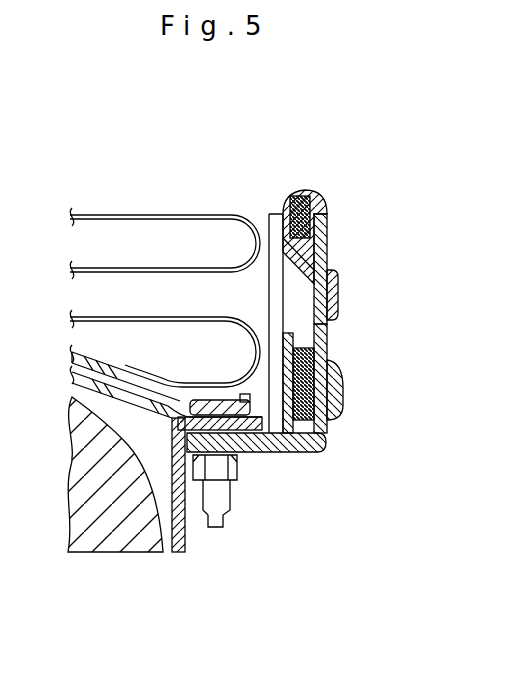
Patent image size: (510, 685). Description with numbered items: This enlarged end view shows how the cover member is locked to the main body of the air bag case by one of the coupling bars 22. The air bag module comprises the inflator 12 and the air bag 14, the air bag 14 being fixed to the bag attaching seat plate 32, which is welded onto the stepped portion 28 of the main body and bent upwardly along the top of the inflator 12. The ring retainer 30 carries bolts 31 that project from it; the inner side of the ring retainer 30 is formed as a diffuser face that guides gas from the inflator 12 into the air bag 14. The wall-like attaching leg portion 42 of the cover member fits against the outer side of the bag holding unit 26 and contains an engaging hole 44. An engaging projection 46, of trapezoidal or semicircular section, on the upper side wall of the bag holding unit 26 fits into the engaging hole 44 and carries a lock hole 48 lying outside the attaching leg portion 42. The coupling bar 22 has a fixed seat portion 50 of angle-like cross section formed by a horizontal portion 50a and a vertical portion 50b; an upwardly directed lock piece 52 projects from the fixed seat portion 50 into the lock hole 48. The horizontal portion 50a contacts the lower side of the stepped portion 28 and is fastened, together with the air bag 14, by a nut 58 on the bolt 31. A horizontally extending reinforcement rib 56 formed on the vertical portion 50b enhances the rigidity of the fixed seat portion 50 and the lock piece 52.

The inflator 12 is at (70, 537).
The air bag 14 is at (160, 215).
The coupling bar 22 is at (369, 284).
The bag holding unit 26 is at (270, 216).
The stepped portion 28 is at (228, 455).
The ring retainer 30 is at (307, 385).
The bolt 31 is at (184, 470).
The bag attaching seat plate 32 is at (205, 498).
The attaching leg portion 42 is at (327, 353).
The engaging hole 44 is at (323, 243).
The engaging projection 46 is at (330, 297).
The lock hole 48 is at (328, 240).
The fixed seat portion 50 is at (329, 453).
The horizontal portion 50a is at (267, 453).
The vertical portion 50b is at (327, 435).
The lock piece 52 is at (312, 206).
The reinforcement rib 56 is at (340, 400).
The nut 58 is at (143, 547).